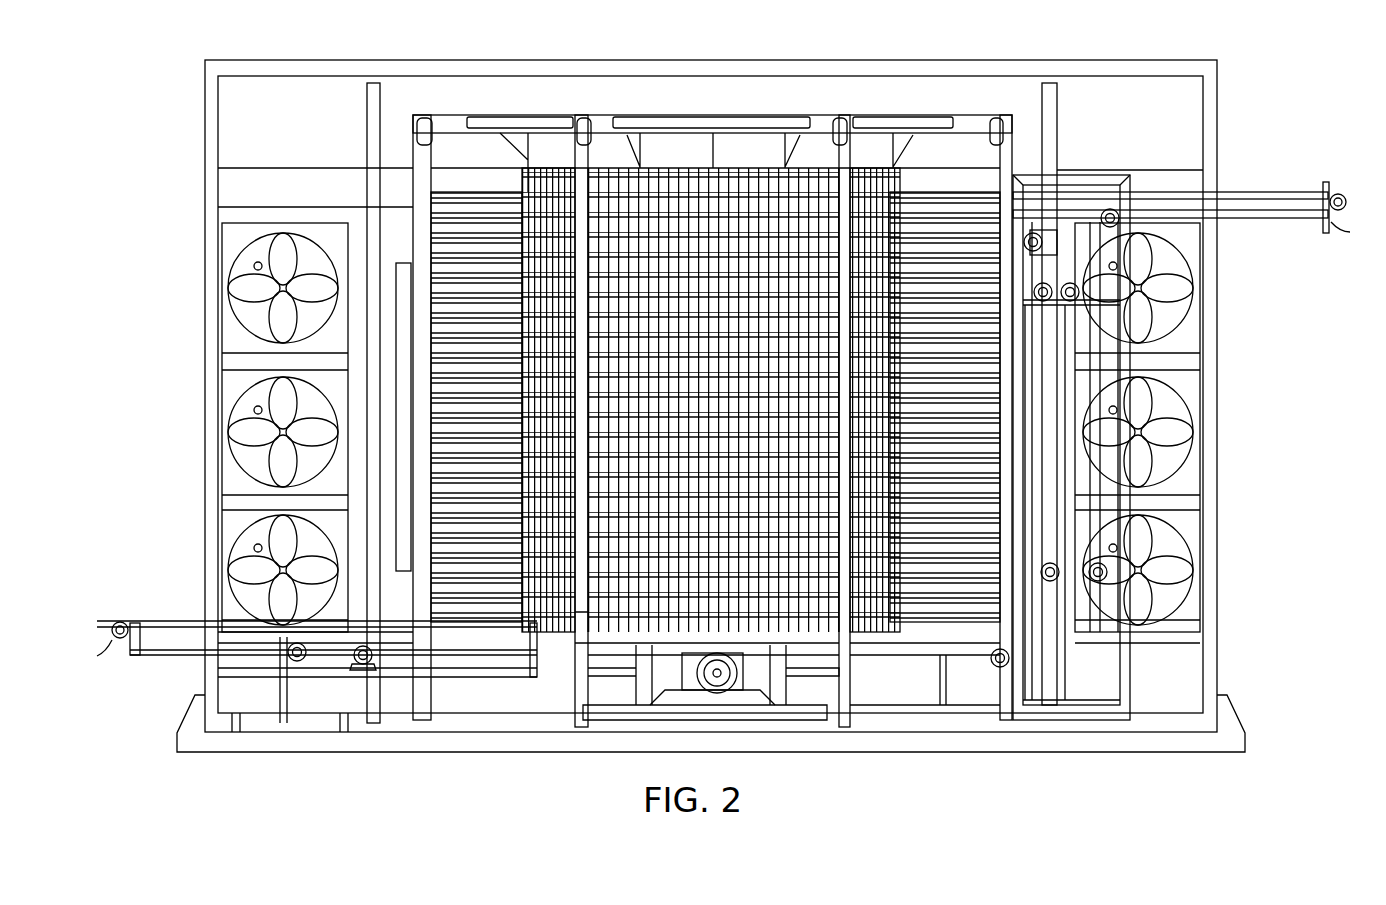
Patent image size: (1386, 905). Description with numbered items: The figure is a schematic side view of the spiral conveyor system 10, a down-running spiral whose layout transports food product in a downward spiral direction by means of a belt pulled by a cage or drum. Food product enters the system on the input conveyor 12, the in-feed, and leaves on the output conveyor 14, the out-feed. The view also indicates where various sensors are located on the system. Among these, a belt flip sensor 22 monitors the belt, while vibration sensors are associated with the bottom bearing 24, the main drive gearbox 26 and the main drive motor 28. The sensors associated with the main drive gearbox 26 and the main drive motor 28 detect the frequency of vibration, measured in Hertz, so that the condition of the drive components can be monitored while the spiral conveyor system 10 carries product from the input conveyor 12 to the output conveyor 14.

The spiral conveyor system 10 is at (343, 160).
The input conveyor 12 is at (1290, 190).
The output conveyor 14 is at (118, 620).
The belt flip sensor 22 is at (423, 603).
The bottom bearing 24 is at (563, 680).
The main drive gearbox 26 is at (863, 653).
The main drive motor 28 is at (737, 687).